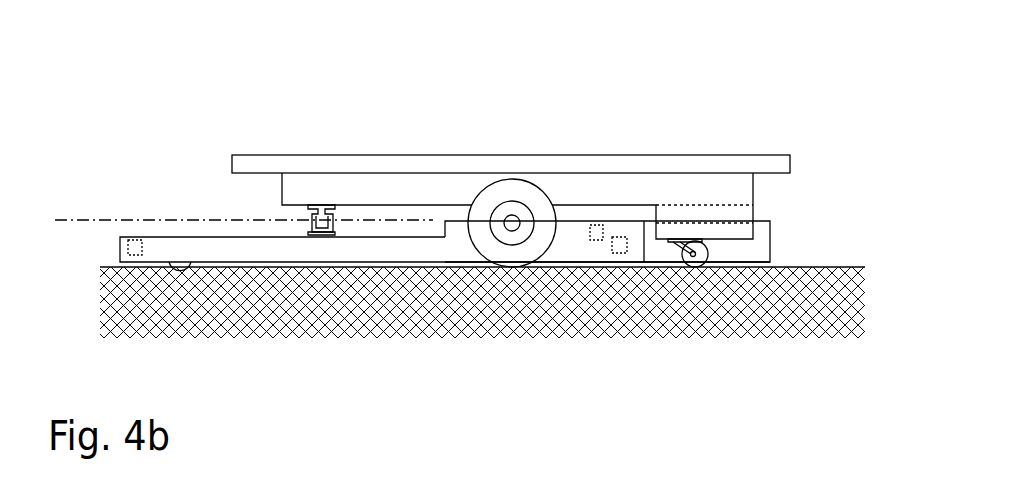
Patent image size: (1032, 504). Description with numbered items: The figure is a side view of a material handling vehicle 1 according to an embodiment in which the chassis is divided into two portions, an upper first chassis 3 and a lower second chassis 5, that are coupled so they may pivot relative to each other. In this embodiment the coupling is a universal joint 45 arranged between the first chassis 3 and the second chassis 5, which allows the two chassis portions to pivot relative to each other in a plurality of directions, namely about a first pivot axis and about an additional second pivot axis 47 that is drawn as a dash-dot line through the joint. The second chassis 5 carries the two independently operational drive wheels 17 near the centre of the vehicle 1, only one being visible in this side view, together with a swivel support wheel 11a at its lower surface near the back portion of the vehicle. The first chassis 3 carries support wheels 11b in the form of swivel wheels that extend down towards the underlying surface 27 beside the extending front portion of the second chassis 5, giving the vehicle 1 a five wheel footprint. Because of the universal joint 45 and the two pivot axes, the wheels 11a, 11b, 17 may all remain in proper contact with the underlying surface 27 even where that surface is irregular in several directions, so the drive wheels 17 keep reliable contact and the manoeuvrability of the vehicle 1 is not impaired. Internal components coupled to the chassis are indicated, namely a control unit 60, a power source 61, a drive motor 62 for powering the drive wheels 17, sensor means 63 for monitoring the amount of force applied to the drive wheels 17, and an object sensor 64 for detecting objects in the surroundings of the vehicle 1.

The vehicle 1 is at (222, 110).
The first chassis 3 is at (745, 183).
The second chassis 5 is at (228, 258).
The support wheel 11a is at (175, 268).
The support wheel 11b is at (688, 268).
The drive wheel 17 is at (495, 192).
The underlying surface 27 is at (843, 267).
The universal joint 45 is at (312, 218).
The second pivot axis 47 is at (123, 216).
The control unit 60 is at (590, 242).
The power source 61 is at (615, 254).
The drive motor 62 is at (475, 262).
The sensor means 63 is at (458, 242).
The object sensor 64 is at (133, 248).